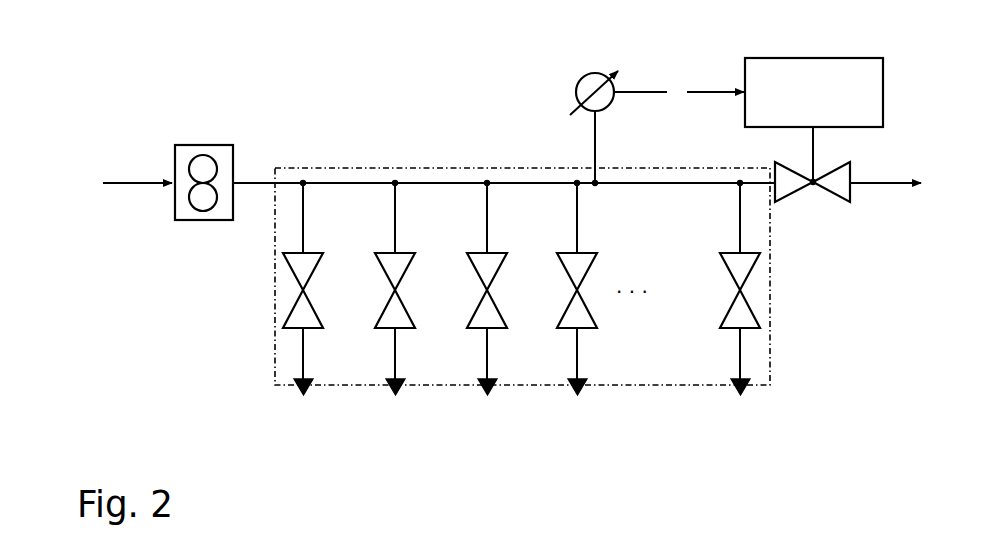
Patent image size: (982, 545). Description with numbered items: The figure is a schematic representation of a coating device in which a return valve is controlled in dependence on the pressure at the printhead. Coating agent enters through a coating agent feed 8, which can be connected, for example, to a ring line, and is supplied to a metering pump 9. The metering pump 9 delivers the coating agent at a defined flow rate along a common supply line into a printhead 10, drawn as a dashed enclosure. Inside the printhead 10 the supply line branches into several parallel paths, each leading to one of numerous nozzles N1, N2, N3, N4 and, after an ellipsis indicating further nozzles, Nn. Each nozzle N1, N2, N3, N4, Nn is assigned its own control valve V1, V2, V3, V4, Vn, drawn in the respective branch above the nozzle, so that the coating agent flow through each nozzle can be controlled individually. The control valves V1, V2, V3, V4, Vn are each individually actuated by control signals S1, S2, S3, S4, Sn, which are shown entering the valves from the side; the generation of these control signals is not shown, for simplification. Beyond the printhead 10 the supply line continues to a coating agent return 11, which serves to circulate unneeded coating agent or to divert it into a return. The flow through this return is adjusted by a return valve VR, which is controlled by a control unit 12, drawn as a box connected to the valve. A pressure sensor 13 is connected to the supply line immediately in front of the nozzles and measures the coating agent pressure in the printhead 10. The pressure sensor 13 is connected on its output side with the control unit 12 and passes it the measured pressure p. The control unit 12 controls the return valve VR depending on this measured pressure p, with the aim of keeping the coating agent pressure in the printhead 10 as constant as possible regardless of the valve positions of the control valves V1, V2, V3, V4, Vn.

The coating agent feed 8 is at (152, 185).
The metering pump 9 is at (203, 145).
The printhead 10 is at (273, 350).
The coating agent return 11 is at (894, 187).
The control unit 12 is at (745, 76).
The pressure sensor 13 is at (576, 93).
The measured pressure p is at (679, 93).
The return valve VR is at (812, 172).
The control signal S1 is at (303, 290).
The control signal S2 is at (395, 290).
The control signal S3 is at (487, 290).
The control signal S4 is at (577, 290).
The control signal Sn is at (740, 290).
The control valve V1 is at (315, 330).
The control valve V2 is at (407, 330).
The control valve V3 is at (499, 330).
The control valve V4 is at (589, 330).
The control valve Vn is at (730, 330).
The nozzle N1 is at (308, 397).
The nozzle N2 is at (390, 397).
The nozzle N3 is at (482, 397).
The nozzle N4 is at (573, 397).
The nozzle Nn is at (738, 397).